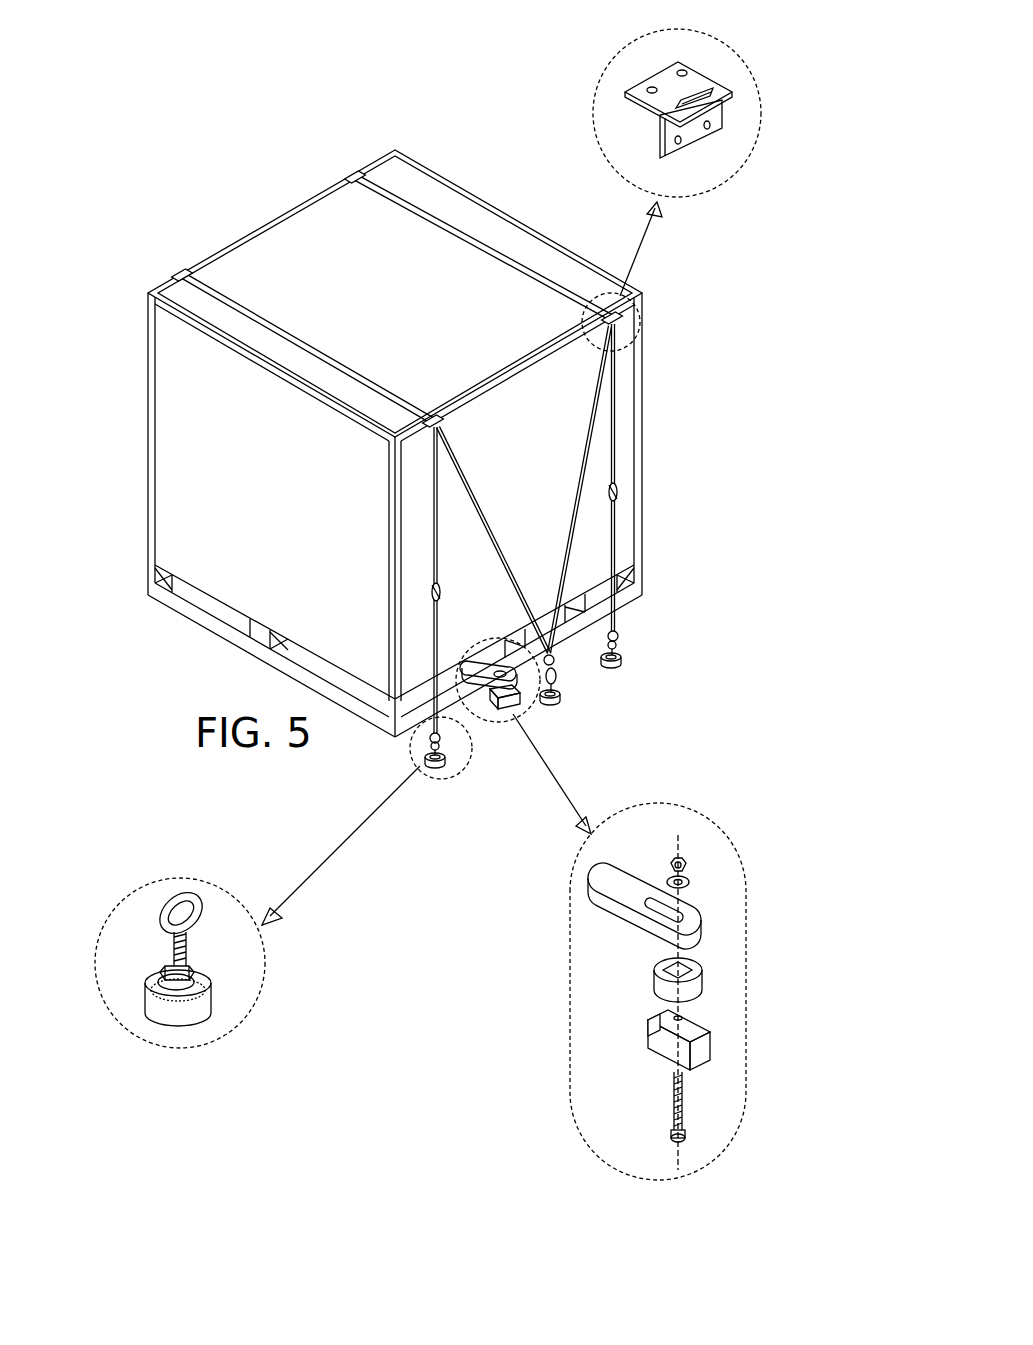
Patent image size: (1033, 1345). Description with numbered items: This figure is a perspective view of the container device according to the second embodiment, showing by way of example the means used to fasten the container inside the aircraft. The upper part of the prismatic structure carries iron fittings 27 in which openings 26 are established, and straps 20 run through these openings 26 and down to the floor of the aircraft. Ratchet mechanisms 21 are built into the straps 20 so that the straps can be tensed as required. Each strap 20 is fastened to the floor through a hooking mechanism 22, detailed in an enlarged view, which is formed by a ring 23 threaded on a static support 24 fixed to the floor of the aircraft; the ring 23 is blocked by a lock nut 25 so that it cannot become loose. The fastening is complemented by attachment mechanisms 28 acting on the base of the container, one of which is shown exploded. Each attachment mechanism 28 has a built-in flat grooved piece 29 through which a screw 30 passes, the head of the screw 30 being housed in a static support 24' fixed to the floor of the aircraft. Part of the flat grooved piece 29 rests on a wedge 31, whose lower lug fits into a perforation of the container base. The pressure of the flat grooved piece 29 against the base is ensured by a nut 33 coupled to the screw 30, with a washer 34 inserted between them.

The straps 20 is at (437, 560).
The ratchet mechanisms 21 is at (618, 488).
The hooking mechanisms 22 is at (635, 646).
The ring 23 is at (200, 912).
The static support 24 is at (117, 1002).
The static support 24' is at (726, 1040).
The lock nut 25 is at (198, 975).
The openings 26 is at (705, 88).
The iron fittings 27 is at (338, 171).
The attachment mechanisms 28 is at (535, 714).
The flat grooved piece 29 is at (712, 930).
The screw 30 is at (684, 1120).
The wedge 31 is at (696, 987).
The nut 33 is at (688, 862).
The washer 34 is at (691, 881).